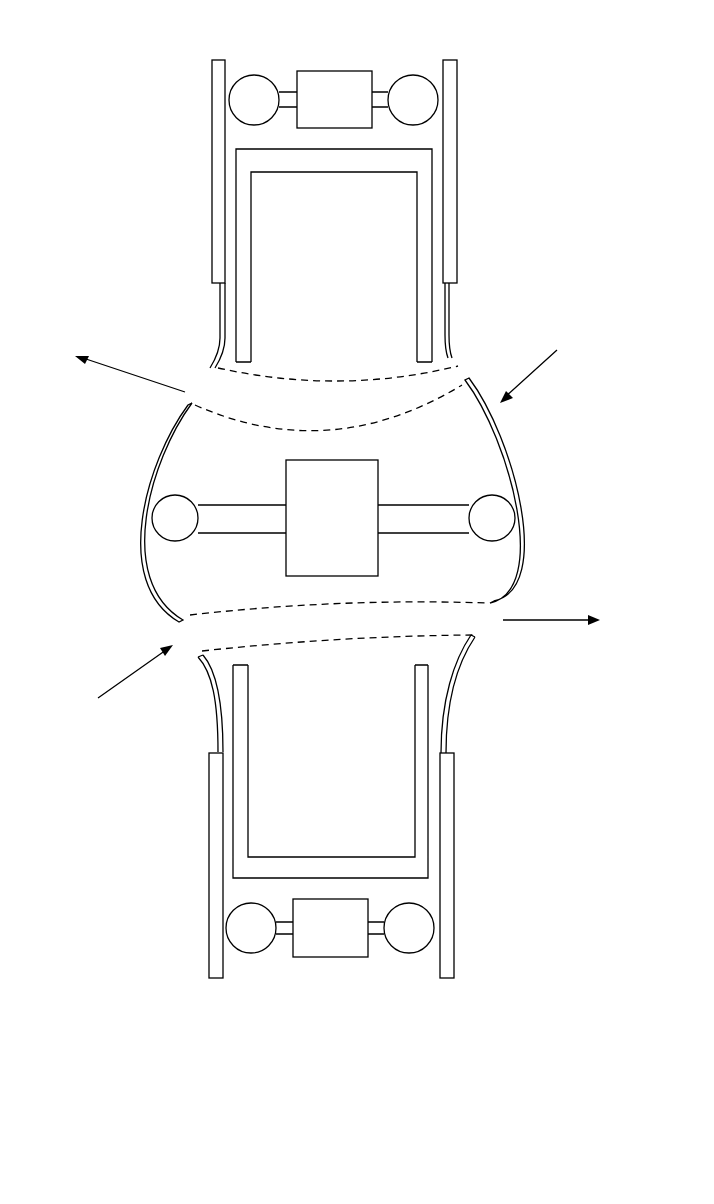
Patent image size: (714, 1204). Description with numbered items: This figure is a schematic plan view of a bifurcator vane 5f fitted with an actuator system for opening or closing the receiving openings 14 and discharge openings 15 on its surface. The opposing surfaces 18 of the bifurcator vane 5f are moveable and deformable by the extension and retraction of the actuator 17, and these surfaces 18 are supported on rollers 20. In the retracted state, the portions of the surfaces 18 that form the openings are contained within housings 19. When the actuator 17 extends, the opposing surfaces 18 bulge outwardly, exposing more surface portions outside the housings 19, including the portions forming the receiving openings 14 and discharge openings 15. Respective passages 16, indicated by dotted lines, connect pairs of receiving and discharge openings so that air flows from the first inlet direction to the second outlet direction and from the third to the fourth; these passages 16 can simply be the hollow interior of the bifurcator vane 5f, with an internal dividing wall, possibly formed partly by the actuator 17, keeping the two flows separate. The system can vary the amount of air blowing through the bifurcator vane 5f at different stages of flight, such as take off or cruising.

The bifurcator vane 5f is at (160, 179).
The receiving opening 14 is at (458, 370).
The discharge opening 15 is at (202, 385).
The passage 16 is at (433, 406).
The actuator 17 is at (293, 497).
The opposing surfaces 18 is at (513, 475).
The housing 19 is at (458, 197).
The rollers 20 is at (395, 72).